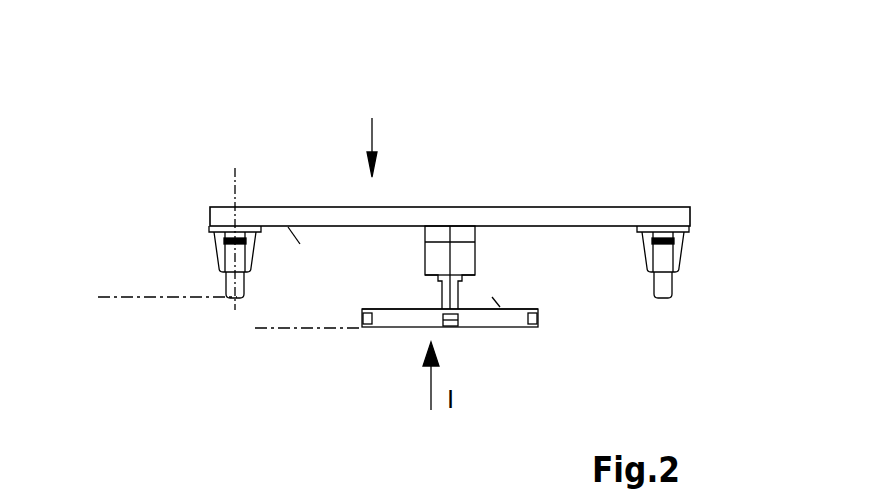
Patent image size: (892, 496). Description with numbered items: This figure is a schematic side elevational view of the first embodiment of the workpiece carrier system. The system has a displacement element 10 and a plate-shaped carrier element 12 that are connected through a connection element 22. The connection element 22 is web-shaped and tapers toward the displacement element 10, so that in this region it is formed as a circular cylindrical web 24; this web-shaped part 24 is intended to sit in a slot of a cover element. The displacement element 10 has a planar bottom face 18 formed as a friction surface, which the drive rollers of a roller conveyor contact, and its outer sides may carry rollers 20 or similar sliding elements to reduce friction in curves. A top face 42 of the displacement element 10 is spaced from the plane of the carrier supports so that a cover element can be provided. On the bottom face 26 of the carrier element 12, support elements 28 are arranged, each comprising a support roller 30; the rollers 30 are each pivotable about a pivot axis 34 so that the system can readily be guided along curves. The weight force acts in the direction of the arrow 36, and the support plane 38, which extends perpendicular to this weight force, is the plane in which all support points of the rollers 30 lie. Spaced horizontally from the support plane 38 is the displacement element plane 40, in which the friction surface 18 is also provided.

The displacement element 10 is at (518, 315).
The carrier element 12 is at (505, 216).
The bottom face 18 is at (493, 328).
The rollers 20 is at (362, 317).
The connection element 22 is at (432, 258).
The circular cylindrical web 24 is at (440, 291).
The bottom face 26 is at (288, 227).
The support elements 28 is at (705, 238).
The support roller 30 is at (665, 287).
The pivot axis 34 is at (235, 180).
The arrow 36 is at (372, 133).
The support plane 38 is at (115, 297).
The displacement element plane 40 is at (270, 328).
The top face 42 is at (497, 308).